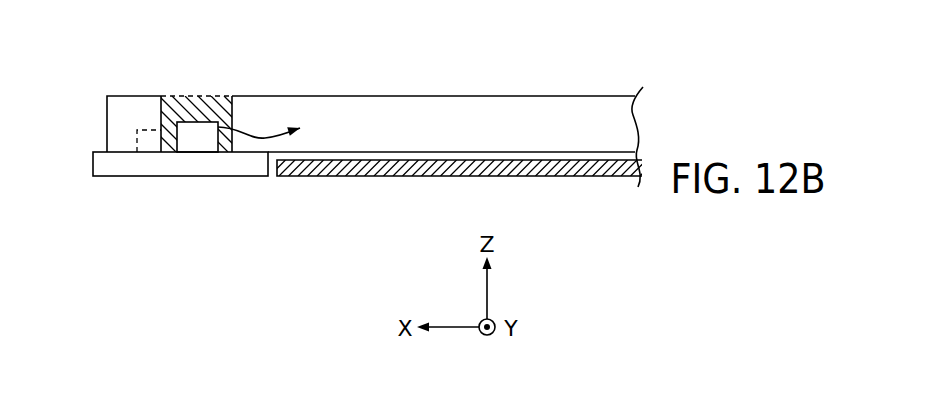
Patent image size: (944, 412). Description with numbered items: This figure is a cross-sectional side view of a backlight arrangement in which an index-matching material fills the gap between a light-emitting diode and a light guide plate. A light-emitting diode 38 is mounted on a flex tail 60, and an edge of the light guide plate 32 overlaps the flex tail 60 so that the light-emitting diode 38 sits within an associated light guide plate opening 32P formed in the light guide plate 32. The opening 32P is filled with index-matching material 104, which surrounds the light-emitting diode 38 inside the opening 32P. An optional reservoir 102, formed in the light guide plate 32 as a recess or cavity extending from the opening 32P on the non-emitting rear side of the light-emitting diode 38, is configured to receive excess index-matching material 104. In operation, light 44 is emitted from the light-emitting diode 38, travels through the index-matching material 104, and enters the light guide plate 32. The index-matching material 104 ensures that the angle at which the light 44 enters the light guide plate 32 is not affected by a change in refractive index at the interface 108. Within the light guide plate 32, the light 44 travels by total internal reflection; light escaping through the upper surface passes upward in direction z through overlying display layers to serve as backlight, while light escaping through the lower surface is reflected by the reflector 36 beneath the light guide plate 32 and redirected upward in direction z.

The light guide plate 32 is at (138, 108).
The index-matching material 104 is at (197, 108).
The light guide plate opening 32P is at (225, 85).
The light 44 is at (250, 134).
The light-emitting diode 38 is at (200, 140).
The flex tail 60 is at (152, 165).
The reservoir 102 is at (147, 140).
The interface 108 is at (233, 153).
The reflector 36 is at (547, 168).